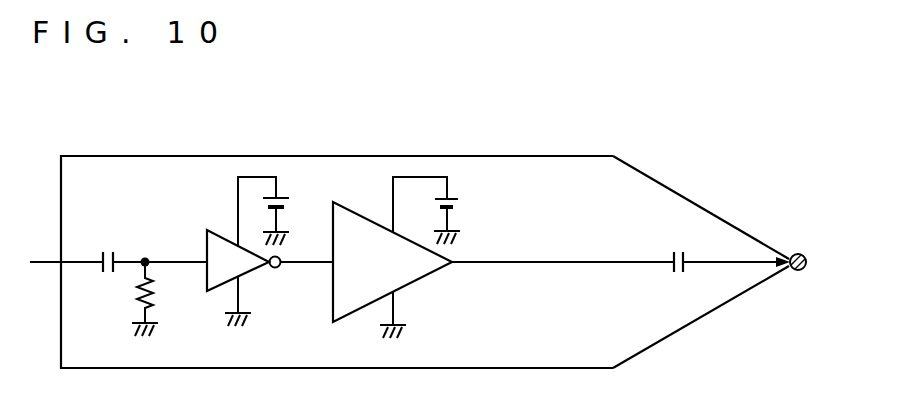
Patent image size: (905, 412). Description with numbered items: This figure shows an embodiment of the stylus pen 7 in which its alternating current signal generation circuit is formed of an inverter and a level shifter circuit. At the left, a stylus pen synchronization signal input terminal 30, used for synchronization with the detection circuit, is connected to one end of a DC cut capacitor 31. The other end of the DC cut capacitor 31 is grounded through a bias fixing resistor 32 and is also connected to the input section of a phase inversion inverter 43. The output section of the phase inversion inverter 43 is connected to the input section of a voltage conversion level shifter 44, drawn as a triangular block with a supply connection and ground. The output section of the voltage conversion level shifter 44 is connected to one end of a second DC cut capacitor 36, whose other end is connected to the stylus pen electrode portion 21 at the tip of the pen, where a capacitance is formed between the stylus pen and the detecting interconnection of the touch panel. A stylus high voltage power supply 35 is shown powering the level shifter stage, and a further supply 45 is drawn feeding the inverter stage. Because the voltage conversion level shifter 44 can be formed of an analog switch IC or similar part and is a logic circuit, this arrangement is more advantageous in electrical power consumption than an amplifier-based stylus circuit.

The stylus pen 7 is at (568, 155).
The stylus pen synchronization signal input terminal 30 is at (43, 255).
The DC cut capacitor 31 is at (109, 248).
The bias fixing resistor 32 is at (153, 300).
The phase inversion inverter 43 is at (225, 233).
The power supply battery for inverter 45 is at (290, 202).
The voltage conversion level shifter 44 is at (367, 213).
The stylus high voltage power supply 35 is at (462, 202).
The DC cut capacitor 36 is at (676, 252).
The stylus pen electrode portion 21 is at (798, 253).